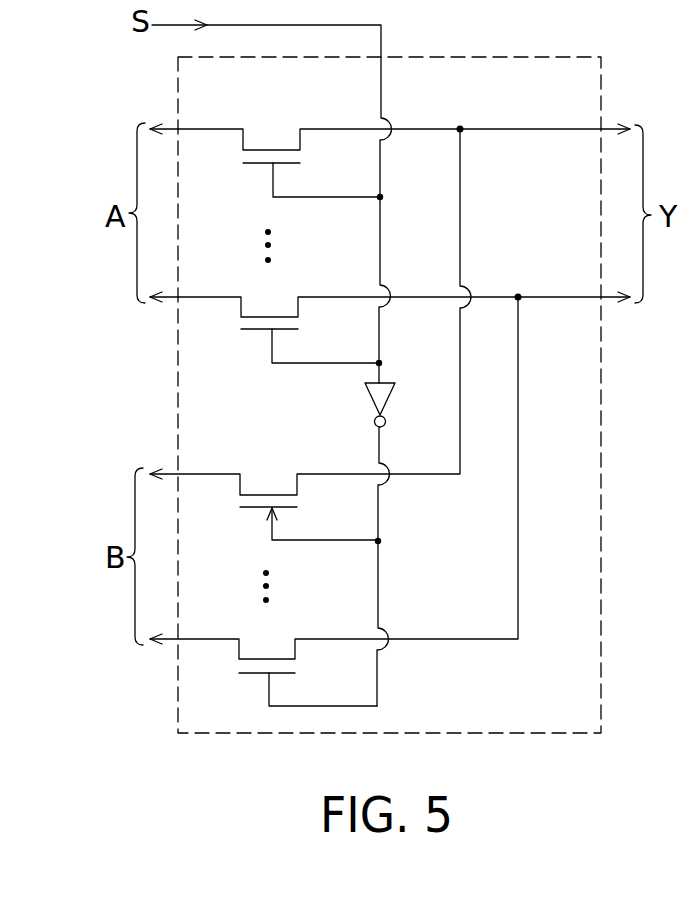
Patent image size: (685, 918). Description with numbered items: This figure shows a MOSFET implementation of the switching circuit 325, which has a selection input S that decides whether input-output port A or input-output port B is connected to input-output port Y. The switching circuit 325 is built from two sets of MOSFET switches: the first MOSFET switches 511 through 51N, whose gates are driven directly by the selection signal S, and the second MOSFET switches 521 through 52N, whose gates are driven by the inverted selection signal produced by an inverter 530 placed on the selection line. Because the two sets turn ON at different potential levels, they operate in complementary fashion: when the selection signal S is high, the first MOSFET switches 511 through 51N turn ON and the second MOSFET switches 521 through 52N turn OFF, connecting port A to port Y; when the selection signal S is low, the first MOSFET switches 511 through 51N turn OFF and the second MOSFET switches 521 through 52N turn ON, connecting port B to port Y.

The first MOSFET switch 511 is at (330, 128).
The first MOSFET switch 51N is at (330, 296).
The second MOSFET switch 521 is at (330, 473).
The second MOSFET switch 52N is at (330, 638).
The inverter 530 is at (408, 405).
The switching circuit 325 is at (176, 690).